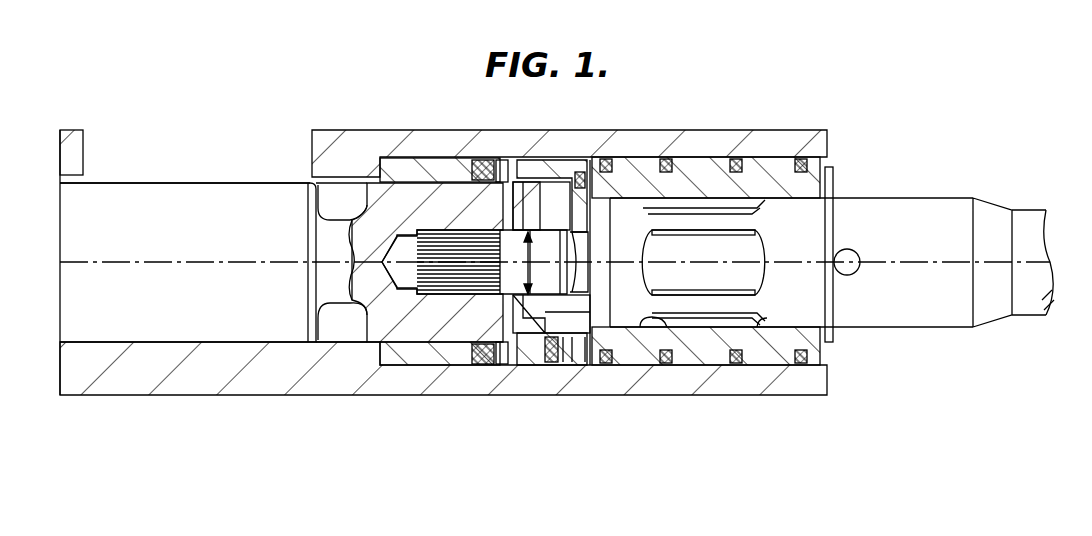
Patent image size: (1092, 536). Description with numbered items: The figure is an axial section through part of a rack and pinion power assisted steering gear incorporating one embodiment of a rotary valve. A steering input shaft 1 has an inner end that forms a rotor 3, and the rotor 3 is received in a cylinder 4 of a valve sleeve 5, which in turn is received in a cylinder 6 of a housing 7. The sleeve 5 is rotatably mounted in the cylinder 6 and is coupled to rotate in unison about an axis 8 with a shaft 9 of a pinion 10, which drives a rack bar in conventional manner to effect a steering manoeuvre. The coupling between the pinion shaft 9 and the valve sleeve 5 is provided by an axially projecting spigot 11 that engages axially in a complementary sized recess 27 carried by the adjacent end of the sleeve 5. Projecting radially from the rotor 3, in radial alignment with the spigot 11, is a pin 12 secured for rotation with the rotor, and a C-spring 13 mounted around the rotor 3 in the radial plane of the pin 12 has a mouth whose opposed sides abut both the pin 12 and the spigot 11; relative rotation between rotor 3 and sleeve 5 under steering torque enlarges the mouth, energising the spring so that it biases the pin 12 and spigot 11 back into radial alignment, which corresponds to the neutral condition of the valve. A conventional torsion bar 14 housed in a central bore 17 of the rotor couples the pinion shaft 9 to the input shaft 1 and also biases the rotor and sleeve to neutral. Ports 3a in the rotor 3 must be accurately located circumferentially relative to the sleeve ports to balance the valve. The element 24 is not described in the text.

The steering input shaft 1 is at (913, 317).
The rotor 3 is at (791, 241).
The ports 3a is at (775, 228).
The cylinder 4 is at (670, 323).
The valve sleeve 5 is at (733, 345).
The cylinder 6 is at (830, 362).
The housing 7 is at (607, 380).
The axis 8 is at (240, 260).
The shaft 9 is at (415, 332).
The pinion 10 is at (223, 188).
The spigot 11 is at (545, 172).
The pin 12 is at (502, 170).
The C-spring 13 is at (553, 362).
The torsion bar 14 is at (500, 340).
The central bore 17 is at (570, 232).
The retainer 24 is at (610, 170).
The recess 27 is at (580, 170).